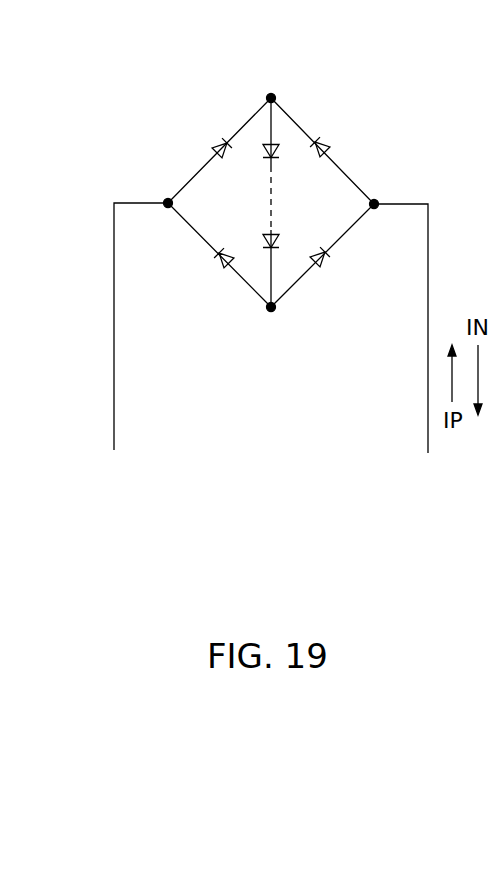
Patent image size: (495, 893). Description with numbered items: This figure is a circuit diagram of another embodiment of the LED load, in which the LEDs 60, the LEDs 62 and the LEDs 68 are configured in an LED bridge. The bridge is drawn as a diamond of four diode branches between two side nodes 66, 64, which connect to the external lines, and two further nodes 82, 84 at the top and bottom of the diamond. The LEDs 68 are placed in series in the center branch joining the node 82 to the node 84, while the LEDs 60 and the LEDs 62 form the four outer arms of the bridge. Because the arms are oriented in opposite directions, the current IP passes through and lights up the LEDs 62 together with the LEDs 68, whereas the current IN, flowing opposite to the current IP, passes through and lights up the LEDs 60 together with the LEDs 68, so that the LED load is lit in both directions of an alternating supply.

The LEDs 60 is at (212, 151).
The LEDs 62 is at (331, 150).
The bridge input node 64 is at (390, 206).
The bridge input node 66 is at (147, 204).
The LEDs 68 is at (280, 153).
The positive output node 82 is at (274, 97).
The negative output node 84 is at (271, 311).